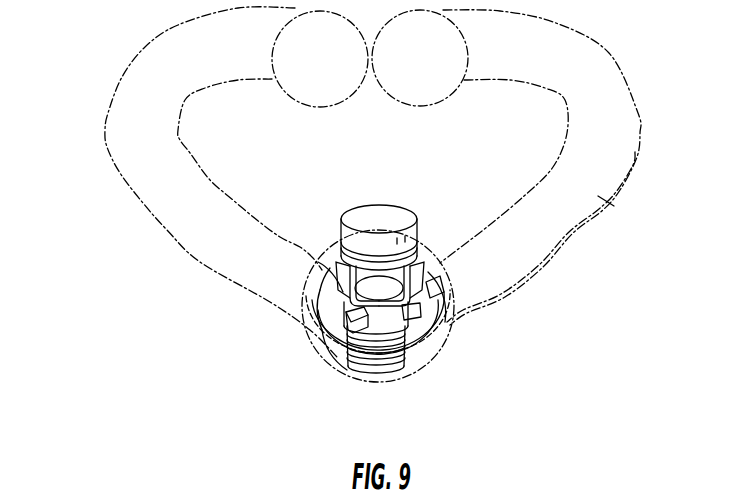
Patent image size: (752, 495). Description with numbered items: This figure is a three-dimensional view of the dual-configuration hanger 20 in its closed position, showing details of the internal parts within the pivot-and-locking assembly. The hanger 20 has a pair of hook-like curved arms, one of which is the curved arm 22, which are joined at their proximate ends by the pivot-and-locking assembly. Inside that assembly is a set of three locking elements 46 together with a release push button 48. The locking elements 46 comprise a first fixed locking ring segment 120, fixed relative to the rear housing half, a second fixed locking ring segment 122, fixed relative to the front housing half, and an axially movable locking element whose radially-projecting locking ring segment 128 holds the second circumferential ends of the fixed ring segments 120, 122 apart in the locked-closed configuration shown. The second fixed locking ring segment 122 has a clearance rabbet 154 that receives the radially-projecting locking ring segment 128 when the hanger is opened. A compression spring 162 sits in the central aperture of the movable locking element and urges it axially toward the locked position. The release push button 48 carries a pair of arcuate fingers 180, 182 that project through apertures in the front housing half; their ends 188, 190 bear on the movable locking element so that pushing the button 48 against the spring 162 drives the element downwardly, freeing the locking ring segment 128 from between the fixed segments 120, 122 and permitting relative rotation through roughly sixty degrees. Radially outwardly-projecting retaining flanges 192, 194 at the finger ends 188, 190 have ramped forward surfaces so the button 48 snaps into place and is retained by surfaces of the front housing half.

The hanger 20 is at (64, 98).
The curved arm 22 is at (612, 206).
The locking elements 46 is at (327, 386).
The release push button 48 is at (383, 220).
The first fixed locking ring segment 120 is at (425, 340).
The second fixed locking ring segment 122 is at (325, 320).
The radially-projecting locking ring segment 128 is at (400, 334).
The clearance rabbet 154 is at (338, 367).
The compression spring 162 is at (383, 334).
The arcuate finger 180 is at (440, 265).
The arcuate finger 182 is at (317, 267).
The end of arcuate finger 188 is at (437, 288).
The end of arcuate finger 190 is at (331, 310).
The retaining flange 192 is at (447, 335).
The retaining flange 194 is at (315, 268).